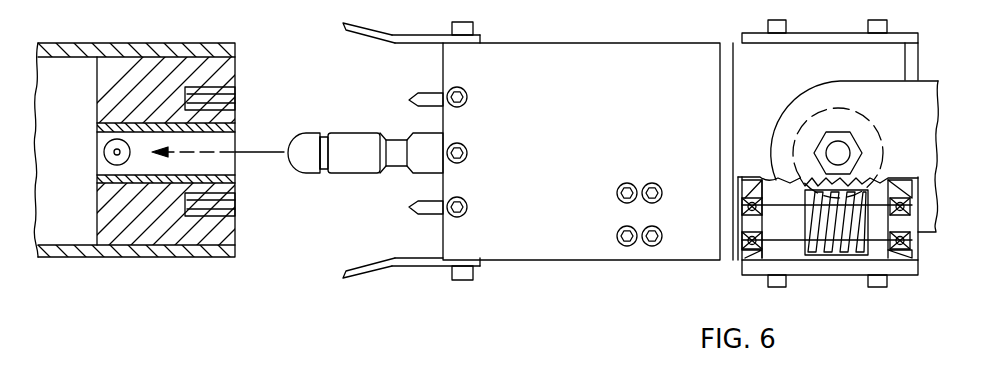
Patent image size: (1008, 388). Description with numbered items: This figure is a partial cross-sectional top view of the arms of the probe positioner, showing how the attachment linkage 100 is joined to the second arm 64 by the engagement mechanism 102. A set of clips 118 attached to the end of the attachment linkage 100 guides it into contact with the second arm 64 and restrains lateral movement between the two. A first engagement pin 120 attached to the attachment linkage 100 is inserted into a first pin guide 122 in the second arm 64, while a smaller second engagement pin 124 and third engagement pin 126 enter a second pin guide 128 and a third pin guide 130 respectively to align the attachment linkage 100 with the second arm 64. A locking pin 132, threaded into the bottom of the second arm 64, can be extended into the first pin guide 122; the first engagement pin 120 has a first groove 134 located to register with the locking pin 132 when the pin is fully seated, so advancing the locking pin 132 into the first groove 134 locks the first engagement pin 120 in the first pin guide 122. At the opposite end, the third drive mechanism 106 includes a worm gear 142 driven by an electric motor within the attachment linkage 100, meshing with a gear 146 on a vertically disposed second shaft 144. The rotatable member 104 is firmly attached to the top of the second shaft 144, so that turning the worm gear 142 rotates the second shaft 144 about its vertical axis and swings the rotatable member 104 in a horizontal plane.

The second arm 64 is at (143, 43).
The attachment linkage 100 is at (572, 60).
The engagement mechanism 102 is at (243, 290).
The rotatable member 104 is at (843, 93).
The third drive mechanism 106 is at (830, 287).
The clips 118 is at (372, 26).
The first engagement pin 120 is at (340, 135).
The first pin guide 122 is at (235, 146).
The second engagement pin 124 is at (432, 212).
The third engagement pin 126 is at (428, 100).
The second pin guide 128 is at (233, 207).
The third pin guide 130 is at (232, 100).
The locking pin 132 is at (104, 152).
The first groove 134 is at (323, 172).
The worm gear 142 is at (797, 200).
The second shaft 144 is at (845, 152).
The gear 146 is at (765, 178).